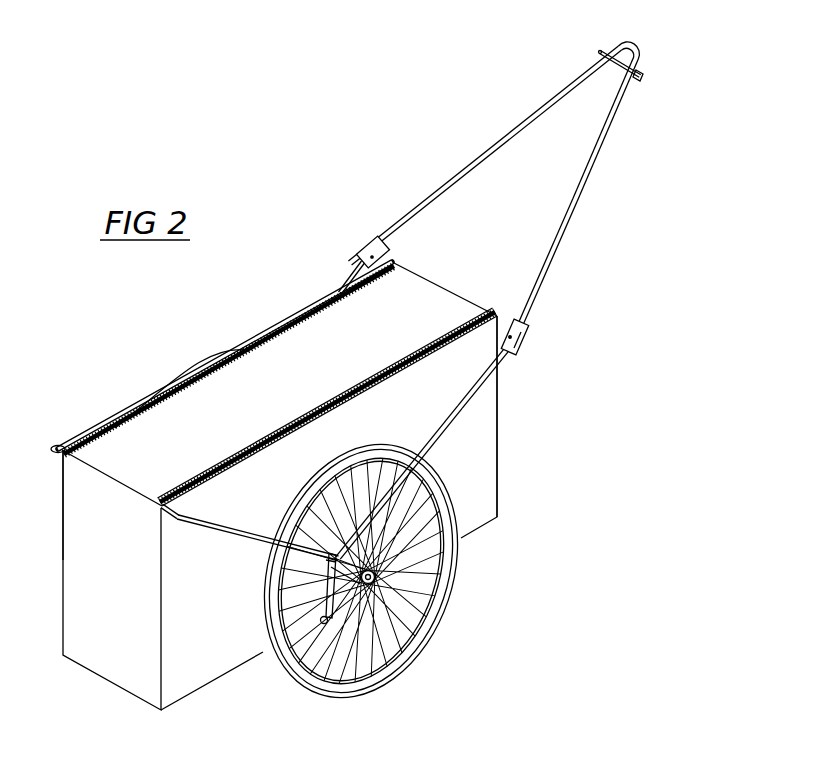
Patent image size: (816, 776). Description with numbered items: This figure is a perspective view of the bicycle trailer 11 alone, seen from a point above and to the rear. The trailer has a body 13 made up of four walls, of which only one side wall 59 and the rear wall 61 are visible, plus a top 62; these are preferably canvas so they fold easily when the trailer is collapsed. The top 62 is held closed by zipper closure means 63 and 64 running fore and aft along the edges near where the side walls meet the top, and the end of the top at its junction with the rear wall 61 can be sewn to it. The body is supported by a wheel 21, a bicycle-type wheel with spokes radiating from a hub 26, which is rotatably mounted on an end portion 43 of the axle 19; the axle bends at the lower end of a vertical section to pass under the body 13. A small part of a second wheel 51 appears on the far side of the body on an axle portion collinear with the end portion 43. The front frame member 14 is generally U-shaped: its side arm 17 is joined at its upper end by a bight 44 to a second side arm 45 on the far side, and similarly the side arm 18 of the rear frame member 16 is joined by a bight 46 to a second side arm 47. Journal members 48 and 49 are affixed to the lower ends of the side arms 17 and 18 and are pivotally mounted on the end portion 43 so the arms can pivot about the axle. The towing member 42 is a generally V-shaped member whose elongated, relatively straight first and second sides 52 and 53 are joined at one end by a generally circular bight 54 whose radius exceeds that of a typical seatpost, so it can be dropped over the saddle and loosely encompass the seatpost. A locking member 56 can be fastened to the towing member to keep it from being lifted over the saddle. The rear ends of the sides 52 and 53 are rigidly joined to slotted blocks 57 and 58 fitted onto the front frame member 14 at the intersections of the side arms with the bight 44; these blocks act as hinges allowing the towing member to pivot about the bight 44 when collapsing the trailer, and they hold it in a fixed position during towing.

The trailer 11 is at (122, 413).
The body 13 is at (498, 402).
The front frame member 14 is at (447, 433).
The rear frame member 16 is at (192, 527).
The side arm 17 is at (469, 397).
The side arm 18 is at (231, 522).
The axle 19 is at (325, 625).
The wheel 21 is at (423, 627).
The hub 26 is at (332, 563).
The towing member 42 is at (594, 172).
The end portion 43 is at (375, 579).
The bight 44 is at (516, 318).
The second side arm 45 is at (357, 272).
The bight 46 is at (62, 456).
The second side arm 47 is at (63, 445).
The journal member 48 is at (364, 569).
The journal member 49 is at (328, 556).
The second wheel 51 is at (196, 360).
The first side 52 is at (558, 247).
The second side 53 is at (491, 151).
The bight 54 is at (642, 44).
The locking member 56 is at (612, 58).
The slotted block 57 is at (530, 328).
The slotted block 58 is at (382, 237).
The side wall 59 is at (329, 513).
The rear wall 61 is at (112, 580).
The top 62 is at (287, 347).
The zipper closure means 63 is at (213, 471).
The zipper closure means 64 is at (147, 414).